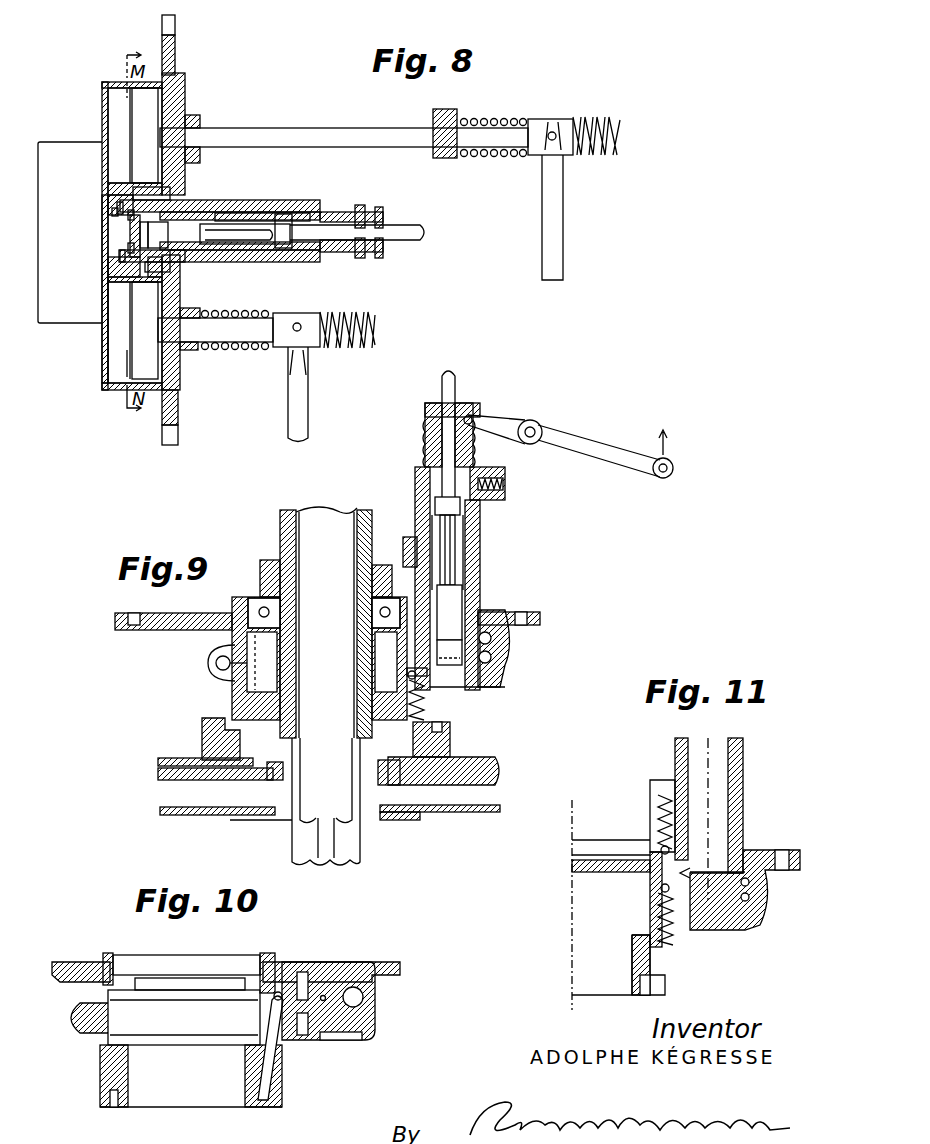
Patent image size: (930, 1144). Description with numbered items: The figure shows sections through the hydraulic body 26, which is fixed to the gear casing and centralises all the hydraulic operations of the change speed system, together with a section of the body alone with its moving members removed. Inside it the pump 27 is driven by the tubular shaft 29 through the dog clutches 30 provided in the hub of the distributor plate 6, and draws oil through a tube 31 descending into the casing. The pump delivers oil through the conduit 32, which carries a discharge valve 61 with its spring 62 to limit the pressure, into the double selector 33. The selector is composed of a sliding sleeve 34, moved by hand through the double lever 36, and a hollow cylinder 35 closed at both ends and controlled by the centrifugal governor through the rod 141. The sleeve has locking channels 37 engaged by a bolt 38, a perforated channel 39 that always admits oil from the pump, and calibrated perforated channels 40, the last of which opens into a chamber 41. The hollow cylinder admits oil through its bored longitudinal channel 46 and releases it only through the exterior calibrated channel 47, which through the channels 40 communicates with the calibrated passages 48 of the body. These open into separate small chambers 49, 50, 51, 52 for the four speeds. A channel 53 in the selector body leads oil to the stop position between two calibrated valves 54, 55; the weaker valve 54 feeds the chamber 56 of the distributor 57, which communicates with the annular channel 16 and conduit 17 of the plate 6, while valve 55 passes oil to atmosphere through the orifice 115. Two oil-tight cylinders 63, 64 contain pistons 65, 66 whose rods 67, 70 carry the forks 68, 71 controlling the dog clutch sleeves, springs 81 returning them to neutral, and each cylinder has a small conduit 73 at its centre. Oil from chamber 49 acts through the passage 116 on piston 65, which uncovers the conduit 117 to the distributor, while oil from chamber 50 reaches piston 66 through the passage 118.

In FIG. 9, the distributor plate 6 is at (500, 770).
In FIG. 9, the annular channel 16 is at (410, 782).
In FIG. 9, the conduit 17 is at (180, 770).
In FIG. 8, the hydraulic body 26 is at (102, 222).
In FIG. 9, the hydraulic body 26 is at (240, 618).
In FIG. 10, the hydraulic body 26 is at (280, 975).
In FIG. 9, the pump 27 is at (250, 678).
In FIG. 9, the tubular shaft 29 is at (290, 715).
In FIG. 9, the dog clutches 30 is at (295, 785).
In FIG. 9, the tube 31 is at (216, 662).
In FIG. 9, the conduit 32 is at (415, 552).
In FIG. 8, the double selector 33 is at (270, 200).
In FIG. 9, the double selector 33 is at (482, 533).
In FIG. 11, the double selector 33 is at (745, 795).
In FIG. 8, the sliding sleeve 34 is at (300, 210).
In FIG. 9, the sliding sleeve 34 is at (420, 497).
In FIG. 8, the hollow cylinder 35 is at (140, 240).
In FIG. 9, the hollow cylinder 35 is at (470, 602).
In FIG. 9, the double lever 36 is at (555, 437).
In FIG. 8, the locking channels 37 is at (358, 255).
In FIG. 9, the locking channels 37 is at (425, 455).
In FIG. 9, the bolt 38 is at (485, 466).
In FIG. 8, the perforated channel 39 is at (300, 258).
In FIG. 9, the perforated channel 39 is at (470, 517).
In FIG. 8, the perforated channels 40 is at (205, 206).
In FIG. 9, the perforated channels 40 is at (480, 580).
In FIG. 9, the chamber 41 is at (492, 656).
In FIG. 8, the bored longitudinal channel 46 is at (240, 246).
In FIG. 9, the bored longitudinal channel 46 is at (460, 548).
In FIG. 8, the exterior calibrated channel 47 is at (164, 234).
In FIG. 9, the exterior calibrated channel 47 is at (462, 648).
In FIG. 8, the passages 48 is at (115, 205).
In FIG. 8, the small chamber 49 is at (178, 274).
In FIG. 10, the small chamber 49 is at (305, 978).
In FIG. 8, the small chamber 50 is at (185, 192).
In FIG. 8, the small chamber 51 is at (115, 278).
In FIG. 10, the small chamber 51 is at (303, 1030).
In FIG. 8, the small chamber 52 is at (110, 214).
In FIG. 8, the channel 53 is at (190, 260).
In FIG. 9, the channel 53 is at (492, 636).
In FIG. 11, the channel 53 is at (690, 868).
In FIG. 11, the calibrated valve 54 is at (650, 905).
In FIG. 11, the calibrated valve 55 is at (652, 880).
In FIG. 9, the chamber 56 is at (232, 735).
In FIG. 10, the chamber 56 is at (115, 1102).
In FIG. 11, the chamber 56 is at (655, 988).
In FIG. 9, the distributor 57 is at (225, 757).
In FIG. 9, the discharge valve 61 is at (435, 690).
In FIG. 9, the spring 62 is at (425, 712).
In FIG. 8, the oil-tight cylinder 63 is at (112, 365).
In FIG. 8, the oil-tight cylinder 64 is at (172, 102).
In FIG. 8, the piston 65 is at (152, 365).
In FIG. 8, the piston 66 is at (135, 95).
In FIG. 8, the rod 67 is at (250, 328).
In FIG. 8, the fork 68 is at (298, 395).
In FIG. 8, the rod 70 is at (263, 130).
In FIG. 8, the fork 71 is at (566, 250).
In FIG. 8, the small conduit 73 is at (148, 178).
In FIG. 10, the small conduit 73 is at (335, 1005).
In FIG. 8, the springs 81 is at (520, 122).
In FIG. 11, the orifice 115 is at (660, 835).
In FIG. 8, the passage 116 is at (172, 280).
In FIG. 8, the conduit 117 is at (142, 325).
In FIG. 10, the conduit 117 is at (268, 1068).
In FIG. 8, the passage 118 is at (178, 176).
In FIG. 8, the rod 141 is at (405, 230).
In FIG. 9, the rod 141 is at (450, 393).